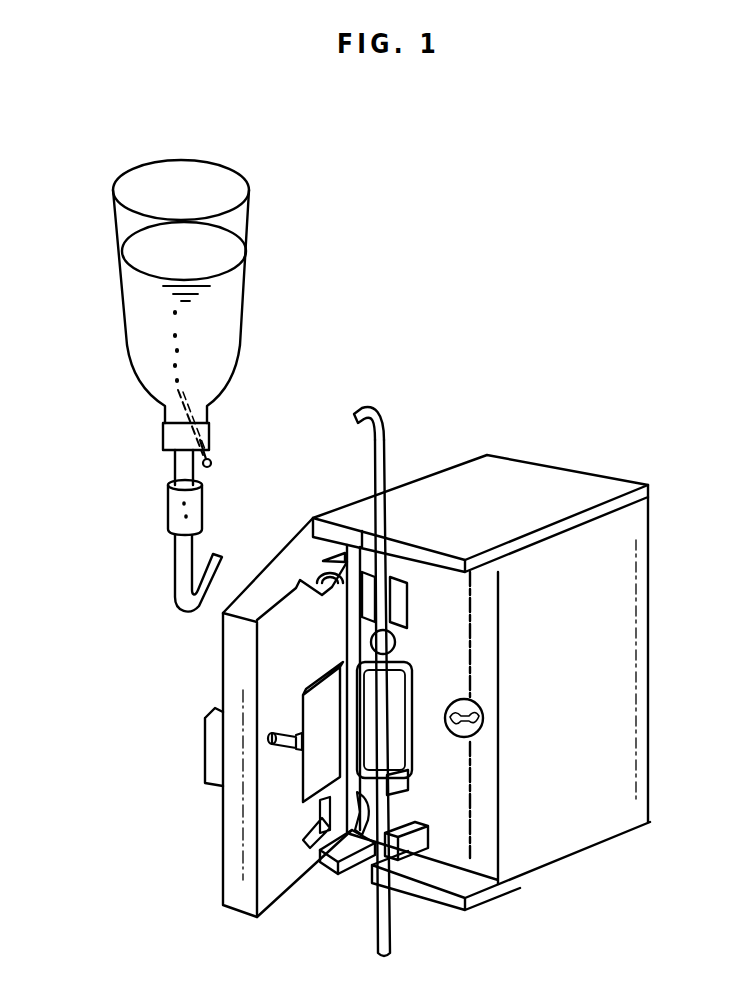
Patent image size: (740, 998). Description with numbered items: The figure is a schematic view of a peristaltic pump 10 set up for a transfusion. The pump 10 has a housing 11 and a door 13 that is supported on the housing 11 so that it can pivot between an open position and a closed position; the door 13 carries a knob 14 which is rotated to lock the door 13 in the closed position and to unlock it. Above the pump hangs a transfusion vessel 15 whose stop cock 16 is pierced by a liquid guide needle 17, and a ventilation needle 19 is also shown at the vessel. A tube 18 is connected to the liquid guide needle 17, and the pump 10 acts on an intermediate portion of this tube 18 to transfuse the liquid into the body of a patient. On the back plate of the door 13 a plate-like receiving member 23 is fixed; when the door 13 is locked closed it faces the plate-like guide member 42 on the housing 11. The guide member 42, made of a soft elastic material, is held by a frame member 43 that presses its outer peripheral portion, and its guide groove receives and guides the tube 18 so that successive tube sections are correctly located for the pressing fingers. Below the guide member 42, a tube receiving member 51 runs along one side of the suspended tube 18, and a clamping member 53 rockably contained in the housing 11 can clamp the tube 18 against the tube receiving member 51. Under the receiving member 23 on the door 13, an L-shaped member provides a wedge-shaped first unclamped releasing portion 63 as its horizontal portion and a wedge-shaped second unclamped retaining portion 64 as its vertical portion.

The peristaltic pump 10 is at (453, 440).
The housing 11 is at (577, 848).
The door 13 is at (233, 823).
The knob 14 is at (212, 758).
The transfusion vessel 15 is at (140, 286).
The stop cock 16 is at (173, 438).
The liquid guide needle 17 is at (172, 470).
The tube 18 is at (183, 600).
The ventilation needle 19 is at (212, 464).
The plate-like receiving member 23 is at (322, 692).
The plate-like guide member 42 is at (397, 703).
The frame member 43 is at (397, 687).
The tube receiving member 51 is at (375, 810).
The clamping member 53 is at (413, 820).
The first unclamped releasing portion 63 is at (323, 857).
The second unclamped retaining portion 64 is at (322, 815).